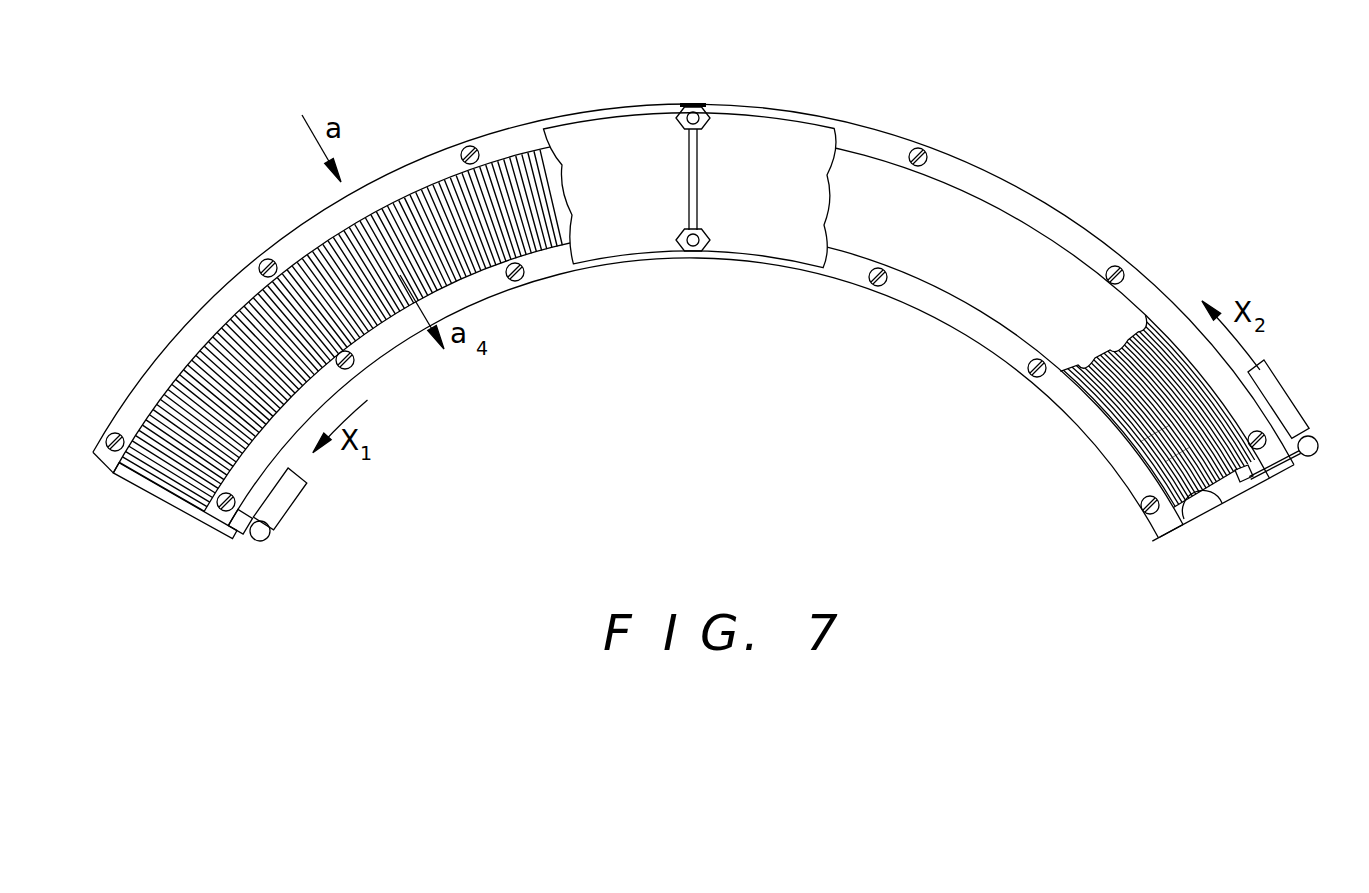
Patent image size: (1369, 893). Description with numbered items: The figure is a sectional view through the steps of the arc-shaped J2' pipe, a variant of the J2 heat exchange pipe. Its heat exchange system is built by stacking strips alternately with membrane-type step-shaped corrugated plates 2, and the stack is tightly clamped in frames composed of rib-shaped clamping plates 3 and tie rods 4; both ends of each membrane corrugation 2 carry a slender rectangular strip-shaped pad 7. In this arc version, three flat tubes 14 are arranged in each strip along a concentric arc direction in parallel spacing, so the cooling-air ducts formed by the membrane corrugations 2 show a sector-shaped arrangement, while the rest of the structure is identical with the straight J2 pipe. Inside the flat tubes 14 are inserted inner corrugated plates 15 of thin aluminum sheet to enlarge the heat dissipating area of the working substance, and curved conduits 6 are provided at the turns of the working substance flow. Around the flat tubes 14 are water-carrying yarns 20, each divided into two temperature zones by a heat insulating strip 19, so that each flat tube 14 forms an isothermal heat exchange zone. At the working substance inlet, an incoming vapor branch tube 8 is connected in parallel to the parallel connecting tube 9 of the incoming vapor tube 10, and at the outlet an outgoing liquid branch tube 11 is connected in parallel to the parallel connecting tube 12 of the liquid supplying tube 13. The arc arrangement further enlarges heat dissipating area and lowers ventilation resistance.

The membrane-type step-shaped corrugated plate 2 is at (222, 405).
The clamping plate 3 is at (332, 388).
The tie rod 4 is at (350, 357).
The curved conduit 6 is at (1212, 516).
The pad 7 is at (170, 493).
The incoming vapor branch tube 8 is at (241, 535).
The parallel connecting tube 9 is at (268, 542).
The incoming vapor tube 10 is at (292, 512).
The outgoing liquid branch tube 11 is at (1270, 483).
The parallel connecting tube 12 is at (1314, 457).
The liquid supplying tube 13 is at (1290, 392).
The flat tube 14 is at (1160, 363).
The inner corrugated plate 15 is at (1170, 534).
The heat insulating strip 19 is at (1178, 455).
The water-carrying yarn 20 is at (1160, 430).